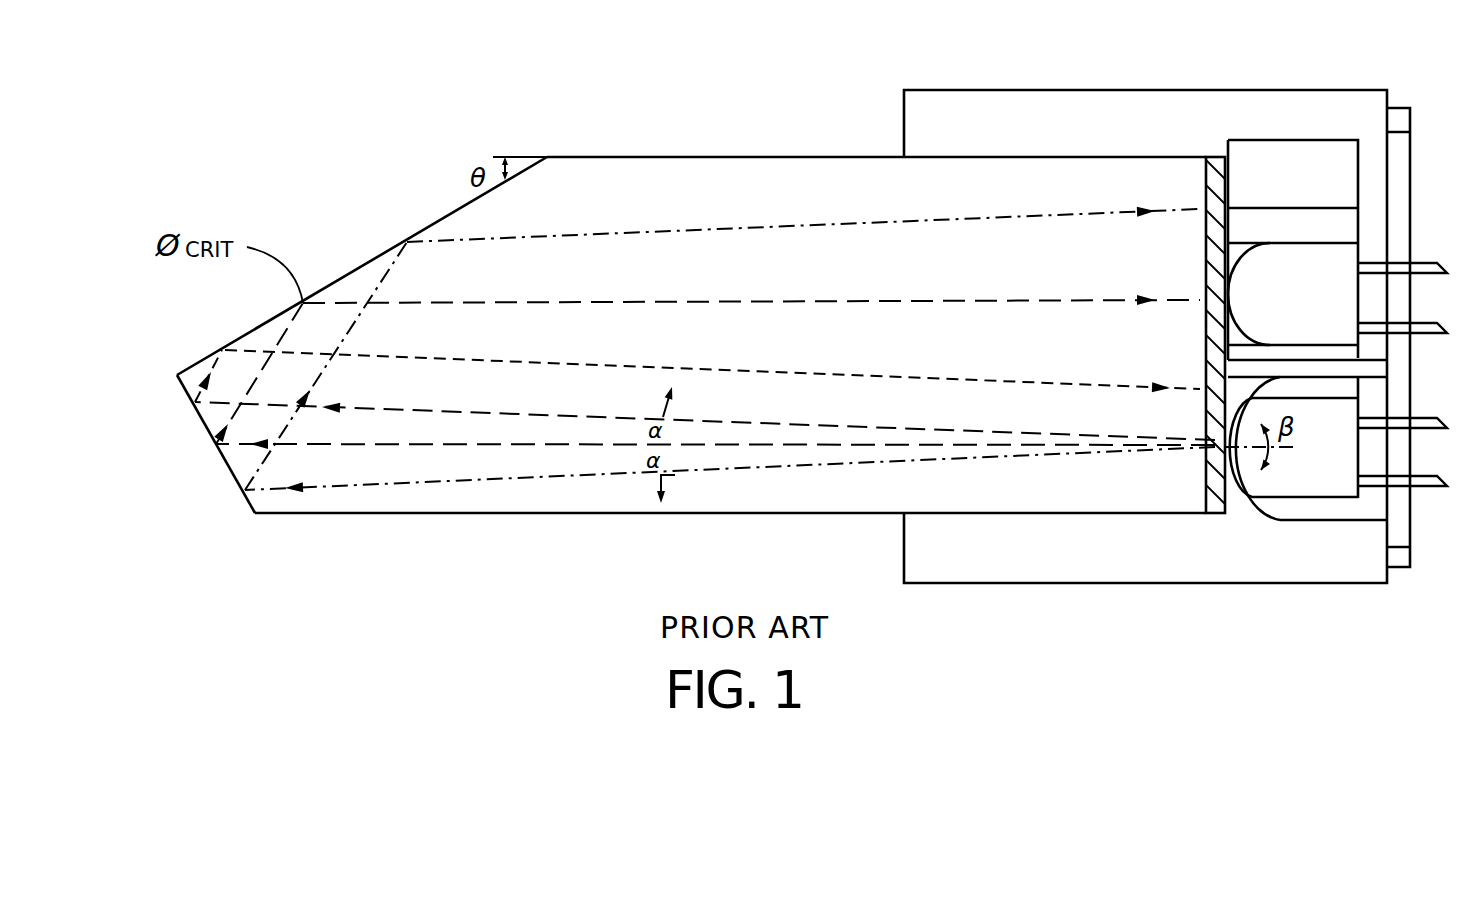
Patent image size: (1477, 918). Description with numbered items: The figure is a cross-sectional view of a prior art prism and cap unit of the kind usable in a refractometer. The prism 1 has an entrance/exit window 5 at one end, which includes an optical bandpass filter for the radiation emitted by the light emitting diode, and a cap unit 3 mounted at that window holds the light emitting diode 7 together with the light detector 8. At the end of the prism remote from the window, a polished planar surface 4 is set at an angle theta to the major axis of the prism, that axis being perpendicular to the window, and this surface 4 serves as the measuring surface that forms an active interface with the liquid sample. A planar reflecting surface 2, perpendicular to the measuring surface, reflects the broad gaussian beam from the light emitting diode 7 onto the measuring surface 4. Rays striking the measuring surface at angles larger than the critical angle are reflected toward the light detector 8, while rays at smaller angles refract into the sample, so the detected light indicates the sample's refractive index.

The prism 1 is at (802, 187).
The planar reflecting surface 2 is at (223, 455).
The cap unit 3 is at (1233, 90).
The polished planar surface 4 is at (372, 260).
The entrance/exit window 5 is at (1215, 158).
The light emitting diode 7 is at (1335, 418).
The light detector 8 is at (1320, 267).